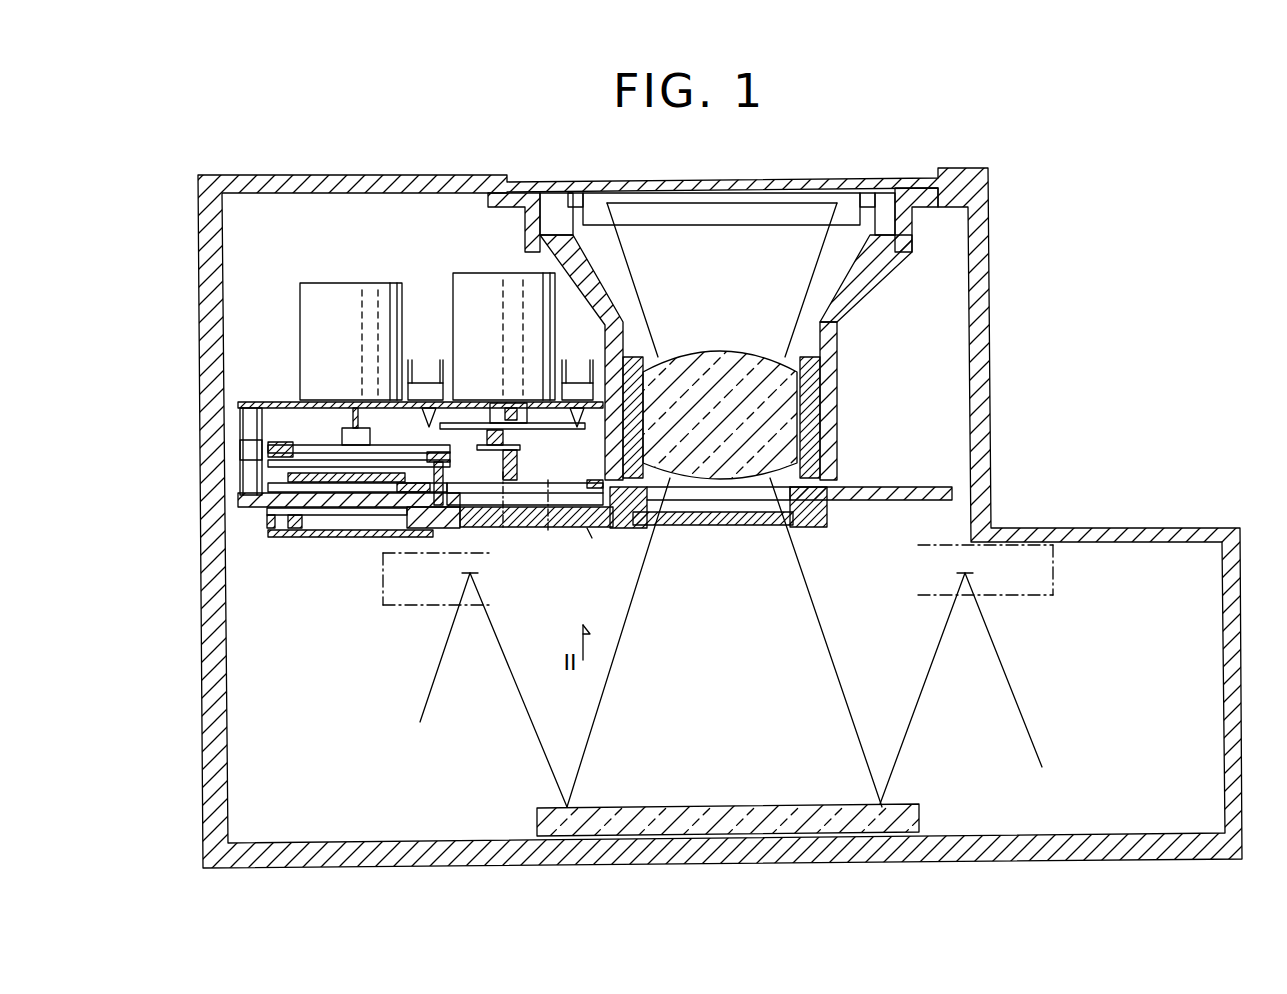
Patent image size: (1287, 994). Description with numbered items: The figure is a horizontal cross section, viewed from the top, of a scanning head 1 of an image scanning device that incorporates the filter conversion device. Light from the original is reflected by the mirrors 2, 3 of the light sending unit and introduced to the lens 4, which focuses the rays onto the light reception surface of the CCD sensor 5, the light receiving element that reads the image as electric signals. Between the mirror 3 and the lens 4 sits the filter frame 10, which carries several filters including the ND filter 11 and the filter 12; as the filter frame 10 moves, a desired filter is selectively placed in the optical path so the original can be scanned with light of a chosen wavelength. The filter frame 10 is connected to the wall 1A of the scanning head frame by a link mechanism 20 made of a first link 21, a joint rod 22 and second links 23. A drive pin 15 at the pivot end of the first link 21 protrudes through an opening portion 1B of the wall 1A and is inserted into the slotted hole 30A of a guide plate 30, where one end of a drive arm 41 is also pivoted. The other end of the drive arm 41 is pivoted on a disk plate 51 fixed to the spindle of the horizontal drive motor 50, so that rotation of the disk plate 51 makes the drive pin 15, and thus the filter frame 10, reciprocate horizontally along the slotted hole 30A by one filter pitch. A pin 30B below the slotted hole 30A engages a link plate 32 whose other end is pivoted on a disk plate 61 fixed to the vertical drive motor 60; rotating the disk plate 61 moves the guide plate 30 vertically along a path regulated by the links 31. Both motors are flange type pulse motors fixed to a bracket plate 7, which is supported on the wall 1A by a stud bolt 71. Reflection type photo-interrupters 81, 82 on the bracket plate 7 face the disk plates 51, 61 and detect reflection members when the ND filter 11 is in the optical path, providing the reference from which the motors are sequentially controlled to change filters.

The scanning head 1 is at (1072, 228).
The wall 1A is at (238, 505).
The opening portion 1B is at (590, 543).
The mirror 2 is at (1053, 585).
The mirror 3 is at (752, 806).
The lens 4 is at (748, 357).
The CCD sensor 5 is at (815, 193).
The bracket plate 7 is at (263, 400).
The filter frame 10 is at (827, 512).
The ND filter 11 is at (707, 528).
The filter 12 is at (607, 528).
The drive pin 15 is at (450, 463).
The link mechanism 20 is at (232, 576).
The first link 21 is at (306, 537).
The joint rod 22 is at (262, 528).
The second link 23 is at (332, 537).
The guide plate 30 is at (553, 528).
The slotted hole 30A is at (565, 481).
The pin 30B is at (463, 553).
The link 31 is at (435, 579).
The link plate 32 is at (513, 438).
The drive arm 41 is at (382, 445).
The horizontal drive motor 50 is at (342, 287).
The disk plate 51 is at (318, 443).
The vertical drive motor 60 is at (483, 283).
The disk plate 61 is at (467, 425).
The stud bolt 71 is at (240, 450).
The reflection type photo-interrupter 81 is at (428, 378).
The reflection type photo-interrupter 82 is at (578, 378).